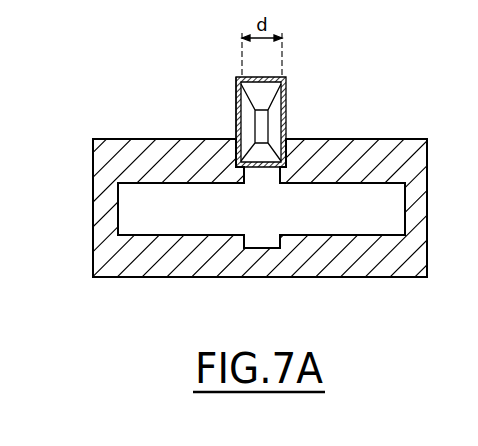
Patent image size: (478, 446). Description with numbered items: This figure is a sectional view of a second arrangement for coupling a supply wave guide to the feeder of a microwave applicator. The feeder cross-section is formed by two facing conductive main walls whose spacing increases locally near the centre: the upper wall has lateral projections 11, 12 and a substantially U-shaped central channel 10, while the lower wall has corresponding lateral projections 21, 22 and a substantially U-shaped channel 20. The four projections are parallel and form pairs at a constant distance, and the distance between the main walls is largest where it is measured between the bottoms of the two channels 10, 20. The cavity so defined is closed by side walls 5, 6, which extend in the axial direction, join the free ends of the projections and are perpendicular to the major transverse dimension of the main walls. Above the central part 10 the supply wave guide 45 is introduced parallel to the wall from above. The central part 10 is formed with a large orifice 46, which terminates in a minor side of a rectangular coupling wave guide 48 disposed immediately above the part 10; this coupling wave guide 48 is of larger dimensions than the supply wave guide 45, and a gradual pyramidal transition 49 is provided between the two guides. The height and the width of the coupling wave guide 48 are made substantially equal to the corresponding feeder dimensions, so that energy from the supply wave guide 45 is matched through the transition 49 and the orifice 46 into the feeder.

The side wall 5 is at (407, 210).
The side wall 6 is at (113, 213).
The U-shaped channel 10 is at (310, 146).
The lateral projection 11 is at (147, 182).
The lateral projection 12 is at (383, 183).
The U-shaped channel 20 is at (258, 249).
The lateral projection 21 is at (155, 240).
The lateral projection 22 is at (358, 240).
The supply wave guide 45 is at (237, 117).
The orifice 46 is at (257, 174).
The coupling wave guide 48 is at (287, 113).
The pyramidal transition 49 is at (287, 85).